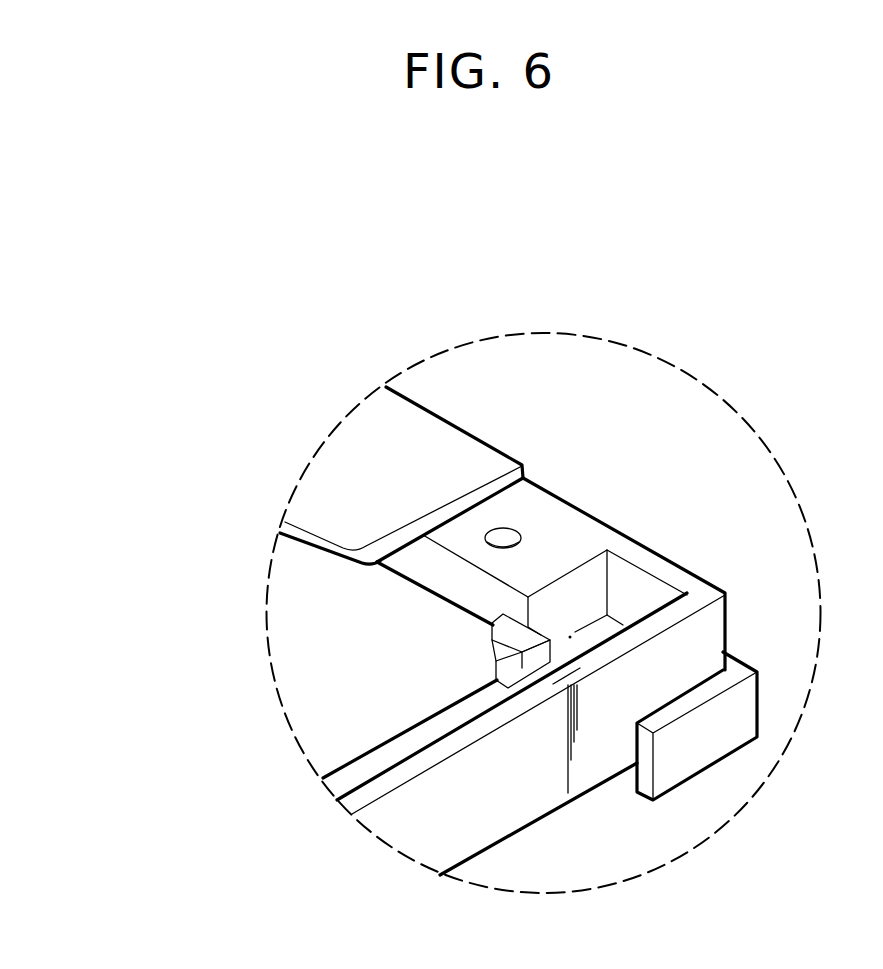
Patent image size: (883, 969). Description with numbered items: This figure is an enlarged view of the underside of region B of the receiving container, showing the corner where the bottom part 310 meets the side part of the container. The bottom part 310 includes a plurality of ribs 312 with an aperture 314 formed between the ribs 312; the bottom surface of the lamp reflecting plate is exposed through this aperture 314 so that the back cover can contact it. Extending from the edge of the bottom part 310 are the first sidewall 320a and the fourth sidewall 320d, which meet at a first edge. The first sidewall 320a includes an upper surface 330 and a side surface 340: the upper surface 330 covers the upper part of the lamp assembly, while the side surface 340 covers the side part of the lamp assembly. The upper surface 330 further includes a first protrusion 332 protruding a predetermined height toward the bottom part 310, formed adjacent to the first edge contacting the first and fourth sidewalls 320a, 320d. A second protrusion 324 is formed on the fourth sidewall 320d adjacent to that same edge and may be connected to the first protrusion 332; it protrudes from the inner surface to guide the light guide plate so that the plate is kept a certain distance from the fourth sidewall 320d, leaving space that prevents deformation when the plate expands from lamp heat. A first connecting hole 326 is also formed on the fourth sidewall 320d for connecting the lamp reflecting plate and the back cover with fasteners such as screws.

The bottom part 310 is at (309, 483).
The ribs 312 is at (330, 492).
The aperture 314 is at (316, 572).
The fourth sidewall 320d is at (560, 535).
The first sidewall 320a is at (453, 756).
The second protrusion 324 is at (367, 654).
The first connecting hole 326 is at (505, 543).
The upper surface 330 is at (350, 776).
The first protrusion 332 is at (498, 672).
The side surface 340 is at (413, 837).
The region B is at (714, 842).